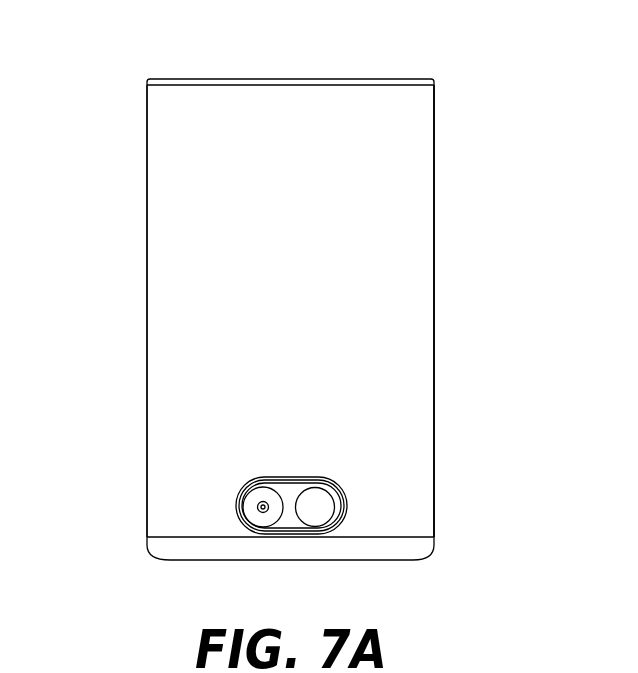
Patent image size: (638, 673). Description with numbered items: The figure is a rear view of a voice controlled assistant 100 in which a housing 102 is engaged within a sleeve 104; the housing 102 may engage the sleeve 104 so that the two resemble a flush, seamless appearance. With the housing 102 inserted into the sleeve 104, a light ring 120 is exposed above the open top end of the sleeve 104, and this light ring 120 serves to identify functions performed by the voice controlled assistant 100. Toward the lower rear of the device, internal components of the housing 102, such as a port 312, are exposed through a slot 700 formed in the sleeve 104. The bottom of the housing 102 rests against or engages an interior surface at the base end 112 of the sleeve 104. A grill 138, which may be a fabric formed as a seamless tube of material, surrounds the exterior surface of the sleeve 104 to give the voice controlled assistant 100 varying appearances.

The voice controlled assistant 100 is at (396, 57).
The housing 102 is at (156, 57).
The sleeve 104 is at (459, 264).
The light ring 120 is at (435, 81).
The grill 138 is at (435, 415).
The base end 112 is at (450, 556).
The slot 700 is at (303, 534).
The port 312 is at (257, 506).